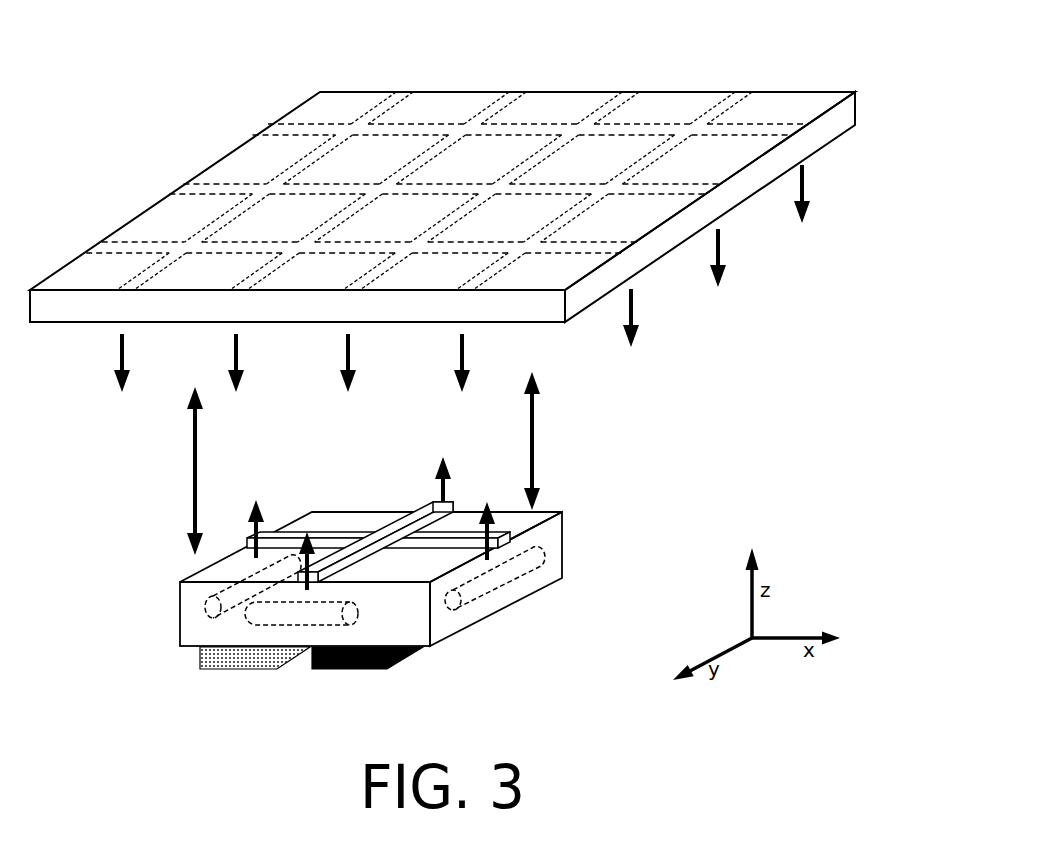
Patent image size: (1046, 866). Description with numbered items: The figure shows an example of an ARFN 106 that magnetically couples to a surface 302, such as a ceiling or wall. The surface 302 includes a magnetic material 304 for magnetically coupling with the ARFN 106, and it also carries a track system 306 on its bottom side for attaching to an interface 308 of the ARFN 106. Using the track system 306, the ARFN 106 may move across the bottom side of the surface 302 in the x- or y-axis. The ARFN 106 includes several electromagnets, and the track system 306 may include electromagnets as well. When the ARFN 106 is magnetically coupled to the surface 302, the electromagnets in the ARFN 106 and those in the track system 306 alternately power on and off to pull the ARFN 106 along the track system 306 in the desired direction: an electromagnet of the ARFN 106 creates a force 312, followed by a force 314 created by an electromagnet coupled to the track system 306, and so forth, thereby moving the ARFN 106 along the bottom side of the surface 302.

The ARFN 106 is at (371, 588).
The surface 302 is at (442, 171).
The magnetic material 304 is at (710, 207).
The track system 306 is at (441, 168).
The interface 308 is at (375, 523).
The force 312 is at (500, 519).
The force 314 is at (462, 278).